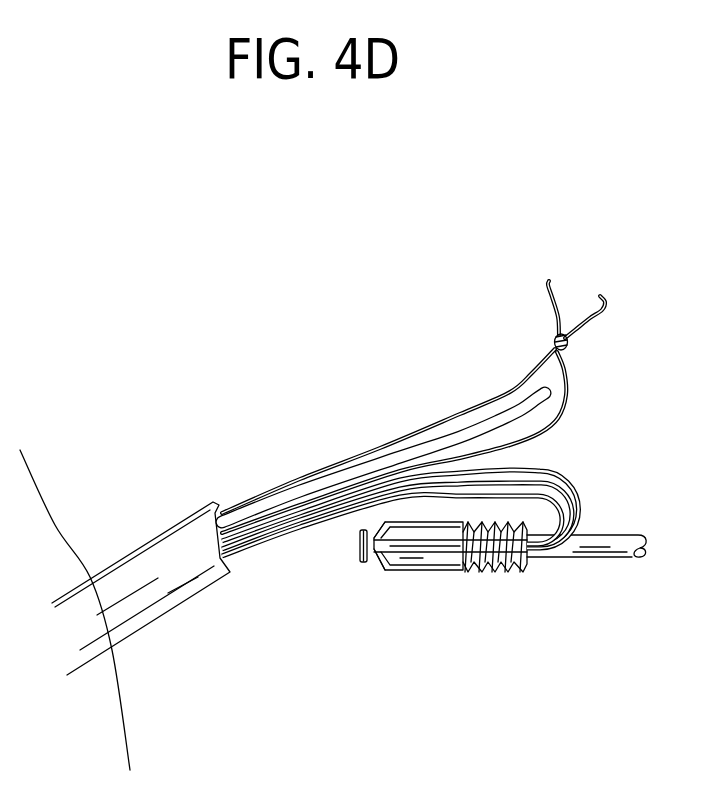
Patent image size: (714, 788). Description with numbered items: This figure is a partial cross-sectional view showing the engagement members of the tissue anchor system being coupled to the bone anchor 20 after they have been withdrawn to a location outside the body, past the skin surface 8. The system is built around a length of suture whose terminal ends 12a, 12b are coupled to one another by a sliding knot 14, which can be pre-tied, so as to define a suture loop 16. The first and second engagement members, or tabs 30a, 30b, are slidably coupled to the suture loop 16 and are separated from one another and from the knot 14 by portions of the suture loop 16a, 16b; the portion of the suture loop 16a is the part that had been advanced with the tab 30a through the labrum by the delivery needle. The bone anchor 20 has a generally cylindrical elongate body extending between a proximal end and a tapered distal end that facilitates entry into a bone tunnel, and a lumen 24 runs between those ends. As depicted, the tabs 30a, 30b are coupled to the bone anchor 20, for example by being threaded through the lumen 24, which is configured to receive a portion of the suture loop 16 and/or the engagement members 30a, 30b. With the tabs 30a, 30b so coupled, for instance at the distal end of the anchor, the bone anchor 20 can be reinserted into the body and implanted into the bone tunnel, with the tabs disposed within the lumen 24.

The skin surface 8 is at (76, 512).
The terminal end of suture 12a is at (597, 307).
The terminal end of suture 12b is at (548, 290).
The sliding knot 14 is at (567, 350).
The suture loop 16 is at (502, 393).
The portion of the suture loop 16a is at (515, 497).
The portion of the suture loop 16b is at (565, 487).
The bone anchor 20 is at (507, 584).
The lumen 24 is at (438, 547).
The engagement member 30a is at (361, 578).
The engagement member 30b is at (372, 576).